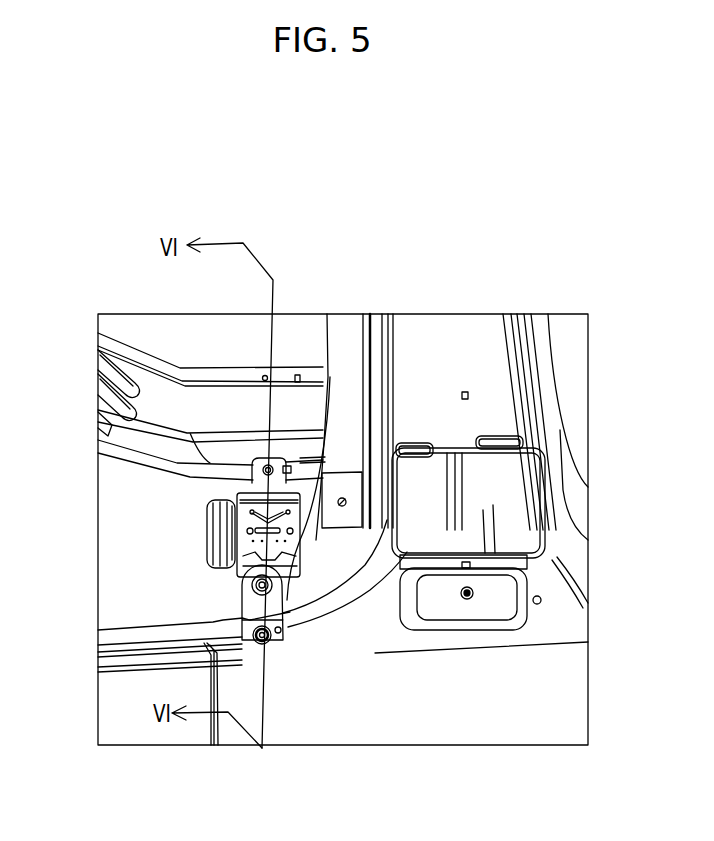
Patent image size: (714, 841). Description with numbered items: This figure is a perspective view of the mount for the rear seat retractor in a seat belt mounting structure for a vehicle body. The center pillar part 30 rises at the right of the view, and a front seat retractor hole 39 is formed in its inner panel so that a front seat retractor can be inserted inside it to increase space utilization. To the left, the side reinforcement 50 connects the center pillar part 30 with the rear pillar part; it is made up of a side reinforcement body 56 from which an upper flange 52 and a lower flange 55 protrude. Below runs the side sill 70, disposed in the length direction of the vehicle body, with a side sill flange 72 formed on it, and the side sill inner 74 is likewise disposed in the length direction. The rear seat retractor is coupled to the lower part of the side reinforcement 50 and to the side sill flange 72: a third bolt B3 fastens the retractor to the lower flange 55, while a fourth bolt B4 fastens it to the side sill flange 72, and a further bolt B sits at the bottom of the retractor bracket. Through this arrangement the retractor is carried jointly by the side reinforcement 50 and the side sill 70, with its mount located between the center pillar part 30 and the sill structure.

The center pillar part 30 is at (507, 438).
The front seat retractor hole 39 is at (480, 510).
The side reinforcement 50 is at (182, 409).
The upper flange 52 is at (137, 353).
The lower flange 55 is at (173, 472).
The side reinforcement body 56 is at (112, 402).
The side sill 70 is at (252, 679).
The side sill flange 72 is at (182, 635).
The side sill inner 74 is at (123, 720).
The lower bolt B is at (266, 641).
The third bolt B3 is at (274, 466).
The fourth bolt B4 is at (272, 588).